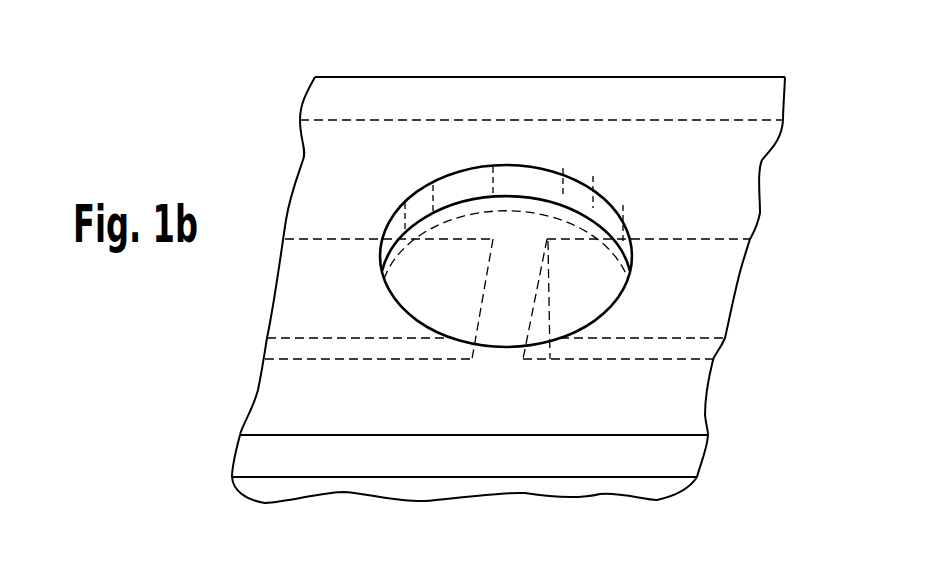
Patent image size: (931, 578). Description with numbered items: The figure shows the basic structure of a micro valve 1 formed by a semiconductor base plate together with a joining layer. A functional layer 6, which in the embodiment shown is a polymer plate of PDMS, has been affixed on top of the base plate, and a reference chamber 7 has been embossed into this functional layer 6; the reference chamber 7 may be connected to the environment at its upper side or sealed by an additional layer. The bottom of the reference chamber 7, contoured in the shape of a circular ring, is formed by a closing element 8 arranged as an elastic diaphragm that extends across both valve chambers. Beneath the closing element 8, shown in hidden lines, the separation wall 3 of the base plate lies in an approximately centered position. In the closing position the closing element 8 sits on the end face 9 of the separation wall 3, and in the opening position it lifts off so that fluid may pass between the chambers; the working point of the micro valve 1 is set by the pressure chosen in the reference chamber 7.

The micro valve 1 is at (218, 65).
The separation wall 3 is at (510, 307).
The functional layer 6 is at (482, 455).
The reference chamber 7 is at (452, 193).
The closing element 8 is at (575, 267).
The end face 9 is at (517, 267).